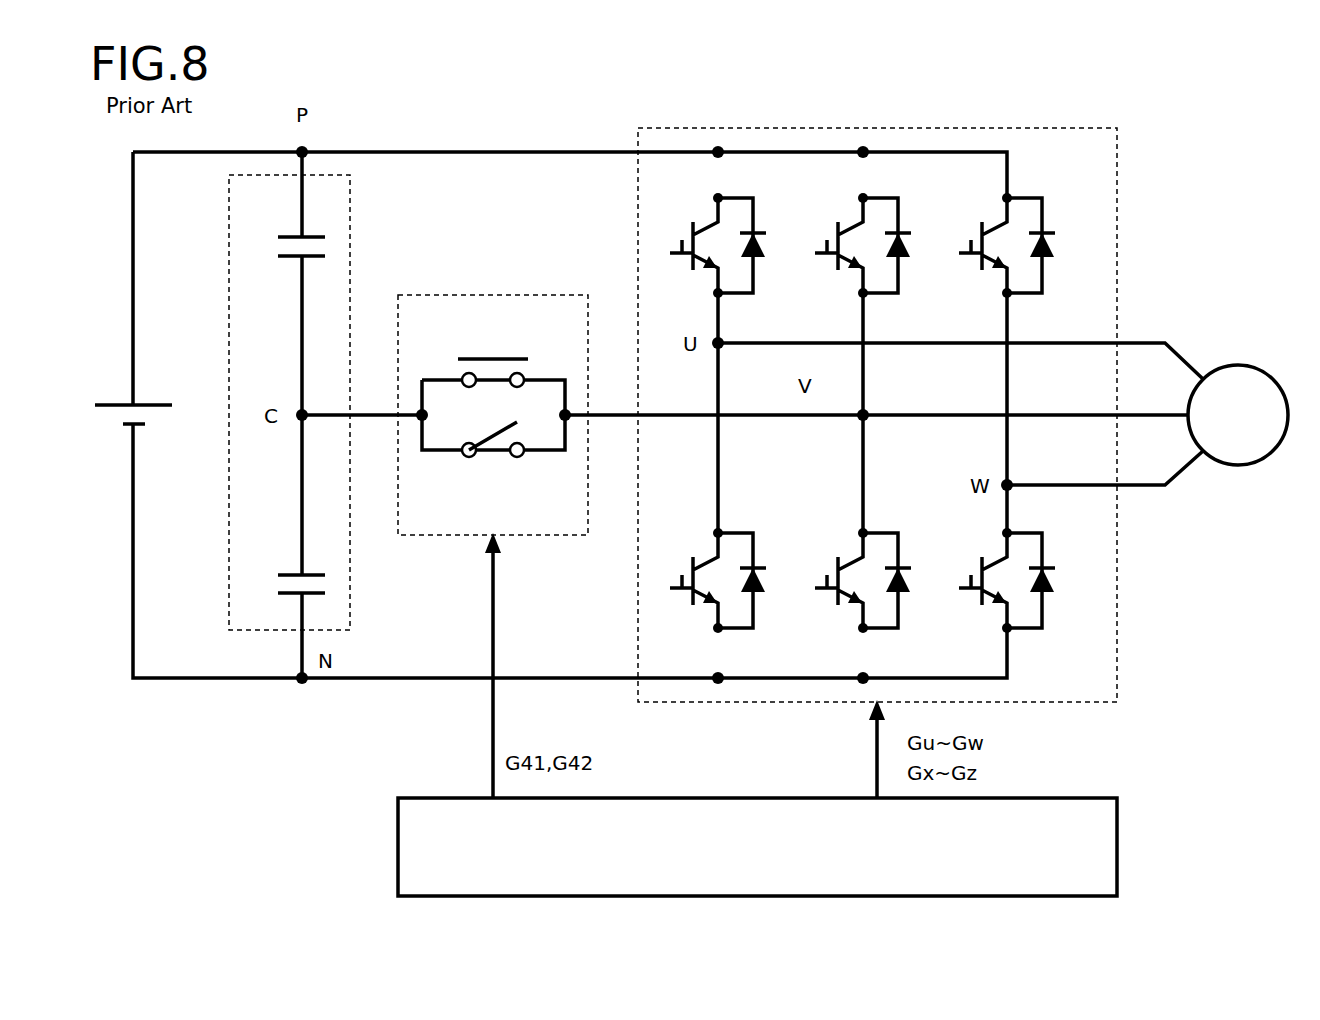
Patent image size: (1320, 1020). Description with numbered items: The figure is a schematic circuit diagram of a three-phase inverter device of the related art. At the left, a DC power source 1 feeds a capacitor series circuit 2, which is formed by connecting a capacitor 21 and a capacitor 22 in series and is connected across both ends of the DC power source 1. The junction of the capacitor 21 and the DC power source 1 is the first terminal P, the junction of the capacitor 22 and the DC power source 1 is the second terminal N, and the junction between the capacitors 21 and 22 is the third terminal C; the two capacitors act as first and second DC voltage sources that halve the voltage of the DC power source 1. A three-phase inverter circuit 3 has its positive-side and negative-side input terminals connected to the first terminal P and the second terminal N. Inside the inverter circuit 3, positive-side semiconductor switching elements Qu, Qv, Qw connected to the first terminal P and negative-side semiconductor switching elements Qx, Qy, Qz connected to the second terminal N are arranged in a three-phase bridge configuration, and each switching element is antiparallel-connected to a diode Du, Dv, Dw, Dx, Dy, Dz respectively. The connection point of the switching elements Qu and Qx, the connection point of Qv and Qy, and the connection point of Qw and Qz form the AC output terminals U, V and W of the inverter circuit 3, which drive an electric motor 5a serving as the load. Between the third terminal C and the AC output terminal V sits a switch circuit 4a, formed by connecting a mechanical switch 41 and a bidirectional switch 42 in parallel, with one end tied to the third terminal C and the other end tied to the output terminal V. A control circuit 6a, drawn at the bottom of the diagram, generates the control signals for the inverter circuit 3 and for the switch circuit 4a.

The DC power source 1 is at (156, 403).
The capacitor series circuit 2 is at (315, 402).
The capacitor 21 is at (291, 226).
The capacitor 22 is at (291, 568).
The three-phase inverter circuit 3 is at (862, 127).
The switch circuit 4a is at (493, 383).
The mechanical switch 41 is at (493, 357).
The bidirectional switch 42 is at (493, 453).
The electric motor 5a is at (1262, 367).
The control circuit 6a is at (1095, 798).
The positive-side semiconductor switching element Qu is at (716, 238).
The positive-side semiconductor switching element Qv is at (861, 239).
The positive-side semiconductor switching element Qw is at (985, 239).
The negative-side semiconductor switching element Qx is at (718, 577).
The negative-side semiconductor switching element Qy is at (863, 577).
The negative-side semiconductor switching element Qz is at (1007, 577).
The diode Du is at (777, 295).
The diode Dv is at (920, 295).
The diode Dw is at (1066, 293).
The diode Dx is at (776, 631).
The diode Dy is at (920, 631).
The diode Dz is at (1063, 629).